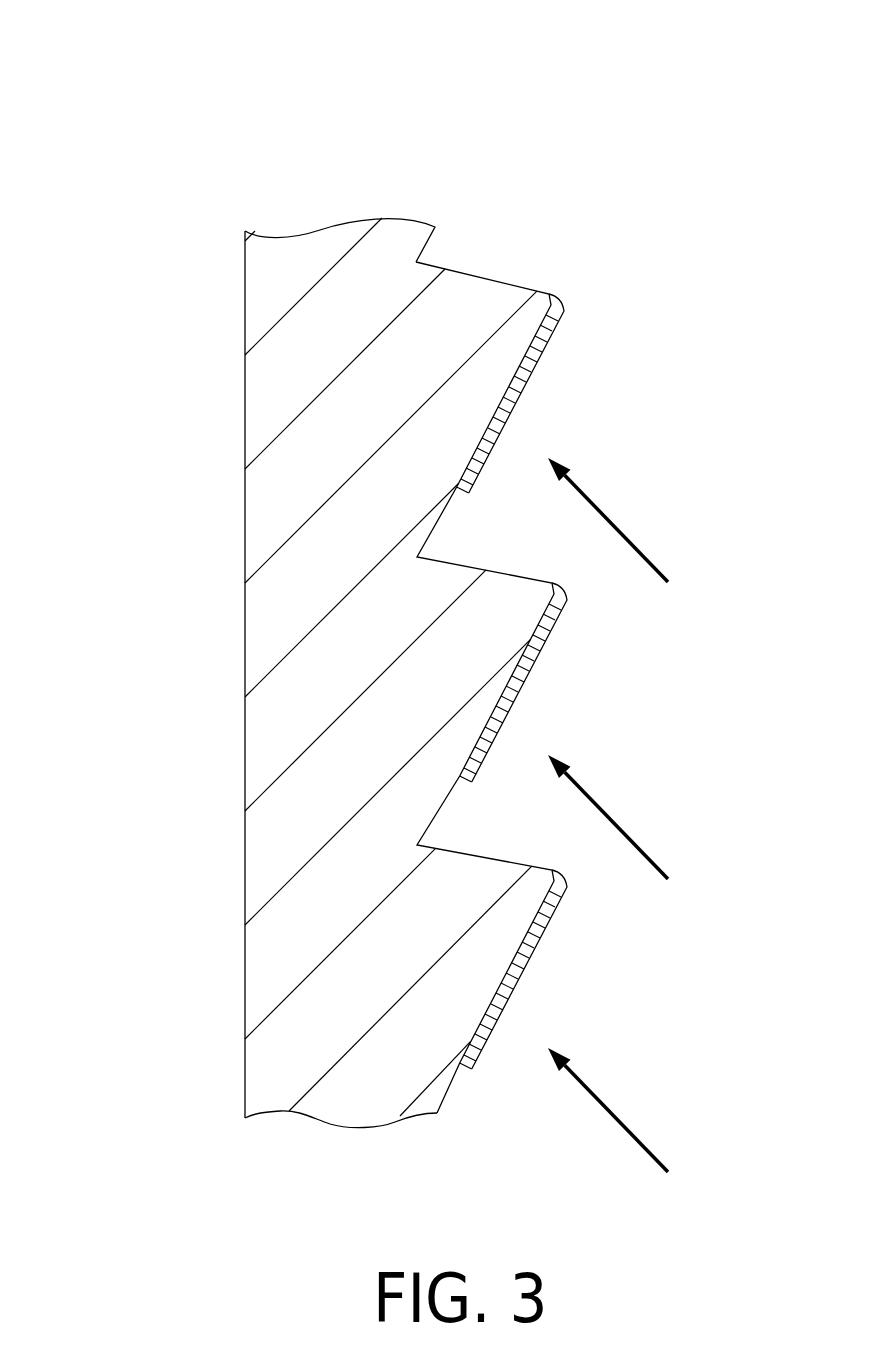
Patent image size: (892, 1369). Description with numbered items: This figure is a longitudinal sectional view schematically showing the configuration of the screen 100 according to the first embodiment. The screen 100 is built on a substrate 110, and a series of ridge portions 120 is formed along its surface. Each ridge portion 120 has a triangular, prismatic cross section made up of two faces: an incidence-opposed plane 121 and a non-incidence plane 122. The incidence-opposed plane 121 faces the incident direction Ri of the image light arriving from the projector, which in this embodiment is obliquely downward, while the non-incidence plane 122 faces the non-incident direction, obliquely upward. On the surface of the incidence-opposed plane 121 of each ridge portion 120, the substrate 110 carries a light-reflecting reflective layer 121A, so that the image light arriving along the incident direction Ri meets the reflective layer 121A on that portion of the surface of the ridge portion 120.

The screen 100 is at (430, 564).
The substrate 110 is at (260, 282).
The ridge portion 120 is at (612, 669).
The incidence-opposed plane 121 is at (588, 681).
The reflective layer 121A is at (512, 413).
The non-incidence plane 122 is at (482, 272).
The incident direction Ri is at (611, 516).